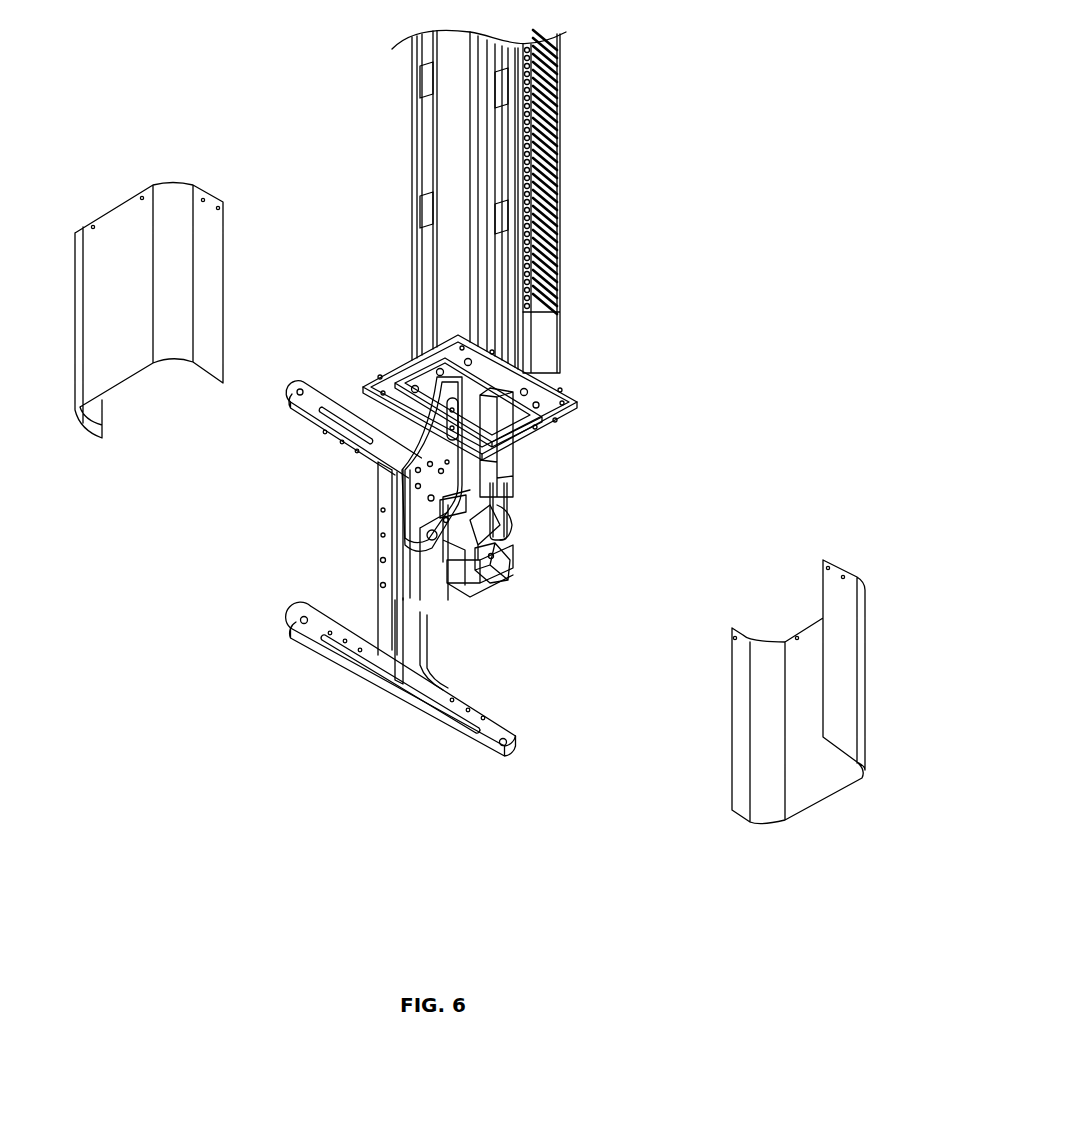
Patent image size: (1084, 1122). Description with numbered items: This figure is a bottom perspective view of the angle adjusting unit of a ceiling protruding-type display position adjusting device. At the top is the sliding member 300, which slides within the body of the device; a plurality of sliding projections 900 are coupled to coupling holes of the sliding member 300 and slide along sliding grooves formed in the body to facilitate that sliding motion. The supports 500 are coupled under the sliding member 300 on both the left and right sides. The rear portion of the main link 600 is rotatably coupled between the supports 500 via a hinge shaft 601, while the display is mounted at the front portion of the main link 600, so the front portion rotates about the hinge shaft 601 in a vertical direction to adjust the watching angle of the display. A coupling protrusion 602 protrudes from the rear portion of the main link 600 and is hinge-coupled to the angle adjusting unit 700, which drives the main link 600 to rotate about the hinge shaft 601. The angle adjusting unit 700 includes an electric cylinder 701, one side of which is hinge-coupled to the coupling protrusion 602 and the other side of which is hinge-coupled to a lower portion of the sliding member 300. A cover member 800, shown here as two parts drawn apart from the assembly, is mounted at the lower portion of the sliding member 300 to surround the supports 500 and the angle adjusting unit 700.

The sliding member 300 is at (440, 133).
The sliding projections 900 is at (423, 213).
The cover member 800 is at (142, 203).
The supports 500 is at (372, 456).
The main link 600 is at (403, 568).
The hinge shaft 601 is at (410, 520).
The coupling protrusion 602 is at (500, 577).
The angle adjusting unit 700 is at (543, 467).
The electric cylinder 701 is at (510, 478).